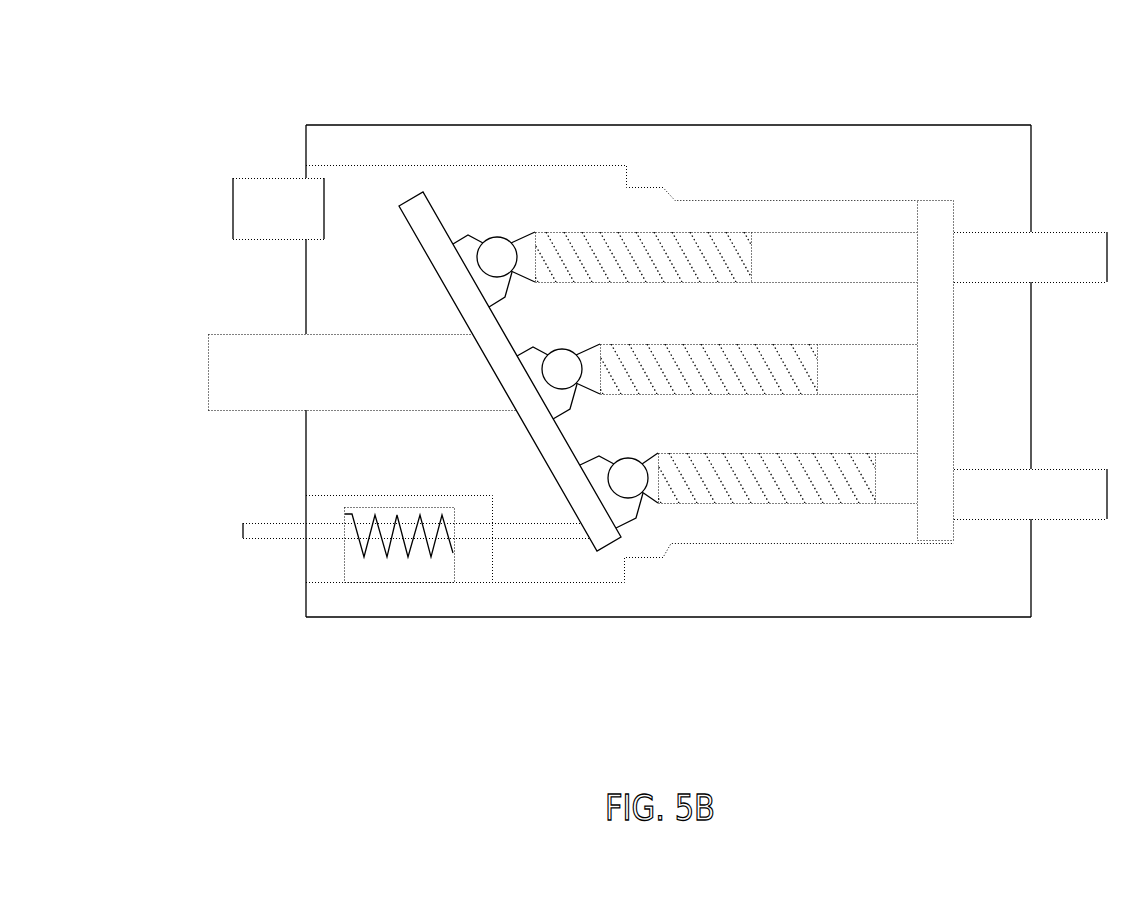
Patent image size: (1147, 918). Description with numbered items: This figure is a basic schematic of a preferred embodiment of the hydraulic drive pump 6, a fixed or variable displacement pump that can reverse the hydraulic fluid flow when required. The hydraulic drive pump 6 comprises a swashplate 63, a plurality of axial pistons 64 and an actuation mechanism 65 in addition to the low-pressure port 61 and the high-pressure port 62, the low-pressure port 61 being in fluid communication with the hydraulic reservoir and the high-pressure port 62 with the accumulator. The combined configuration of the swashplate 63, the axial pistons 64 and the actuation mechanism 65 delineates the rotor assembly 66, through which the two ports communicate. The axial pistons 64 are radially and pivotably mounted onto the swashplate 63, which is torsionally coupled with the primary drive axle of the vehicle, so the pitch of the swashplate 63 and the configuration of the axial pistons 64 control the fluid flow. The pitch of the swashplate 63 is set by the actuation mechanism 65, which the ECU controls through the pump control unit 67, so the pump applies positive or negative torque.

The hydraulic drive pump 6 is at (559, 113).
The low-pressure port 61 is at (1078, 242).
The high-pressure port 62 is at (1078, 503).
The swashplate 63 is at (428, 232).
The plurality of axial pistons 64 is at (717, 250).
The actuation mechanism 65 is at (283, 530).
The rotor assembly 66 is at (538, 559).
The pump control unit 67 is at (261, 236).